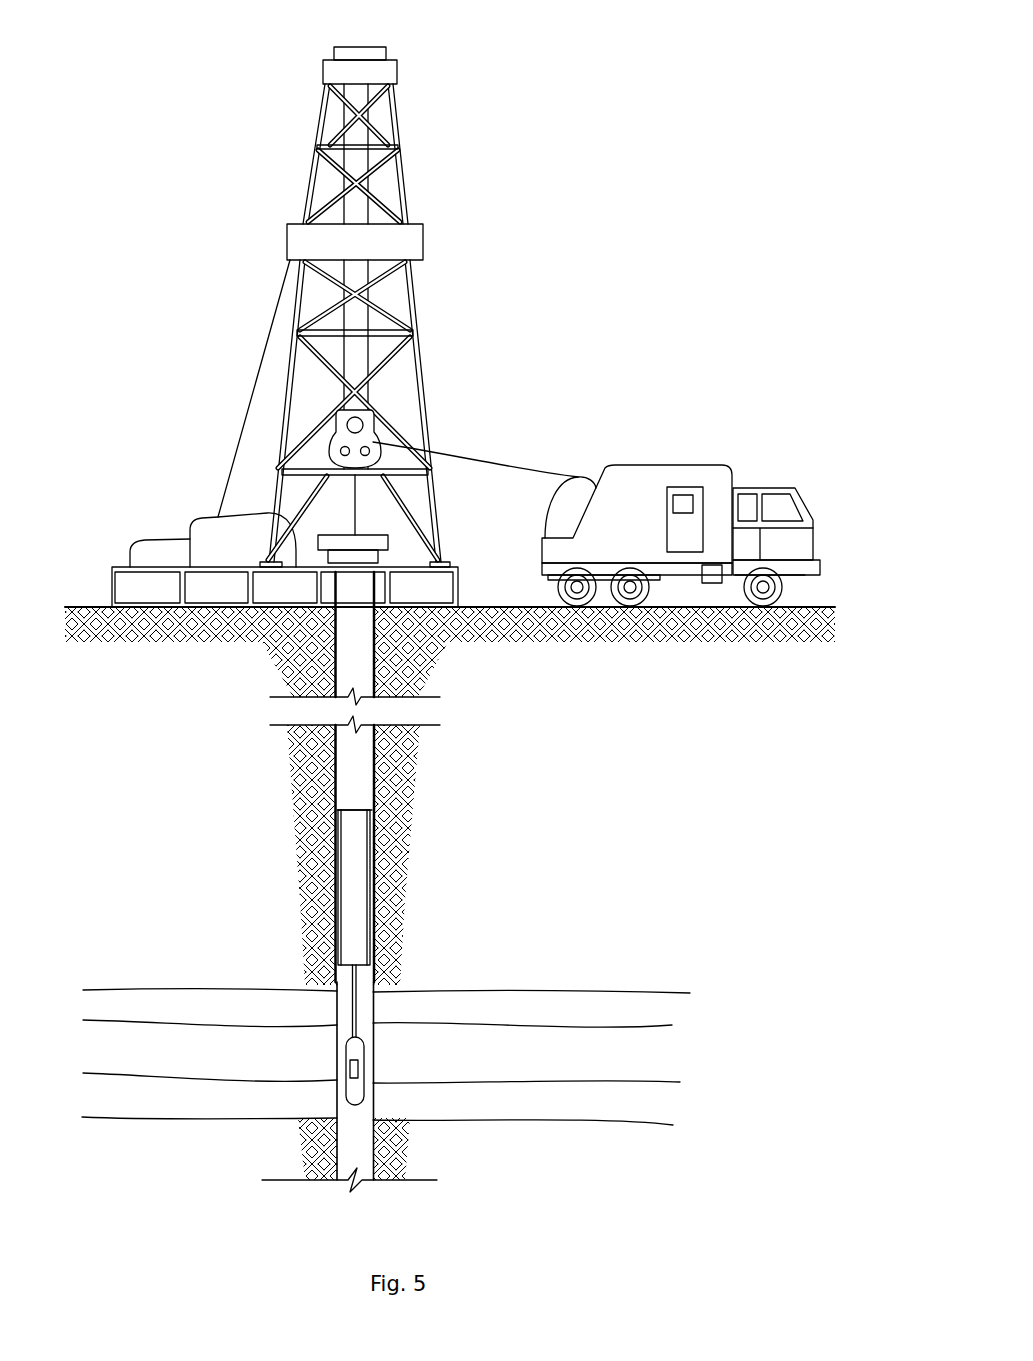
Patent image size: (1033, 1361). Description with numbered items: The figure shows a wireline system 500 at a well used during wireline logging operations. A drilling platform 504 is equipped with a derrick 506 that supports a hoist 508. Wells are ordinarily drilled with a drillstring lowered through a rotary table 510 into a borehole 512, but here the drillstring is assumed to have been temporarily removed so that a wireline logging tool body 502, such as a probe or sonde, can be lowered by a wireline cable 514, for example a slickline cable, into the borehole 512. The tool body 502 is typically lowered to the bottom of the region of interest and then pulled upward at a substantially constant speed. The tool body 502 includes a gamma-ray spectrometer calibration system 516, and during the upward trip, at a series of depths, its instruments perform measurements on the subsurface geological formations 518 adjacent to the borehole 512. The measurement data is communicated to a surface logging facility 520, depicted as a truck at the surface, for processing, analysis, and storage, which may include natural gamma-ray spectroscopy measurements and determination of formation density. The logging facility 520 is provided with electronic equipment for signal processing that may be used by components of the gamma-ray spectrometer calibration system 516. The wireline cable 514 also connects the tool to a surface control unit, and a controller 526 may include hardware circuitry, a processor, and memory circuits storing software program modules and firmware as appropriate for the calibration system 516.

The wireline system 500 is at (643, 212).
The wireline logging tool body 502 is at (364, 1096).
The drilling platform 504 is at (458, 591).
The derrick 506 is at (444, 554).
The hoist 508 is at (368, 420).
The rotary table 510 is at (388, 534).
The borehole 512 is at (337, 1013).
The wireline cable 514 is at (477, 457).
The gamma-ray spectrometer calibration system 516 is at (360, 1068).
The subsurface geological formations 518 is at (687, 983).
The surface logging facility 520 is at (681, 506).
The controller 526 is at (683, 495).